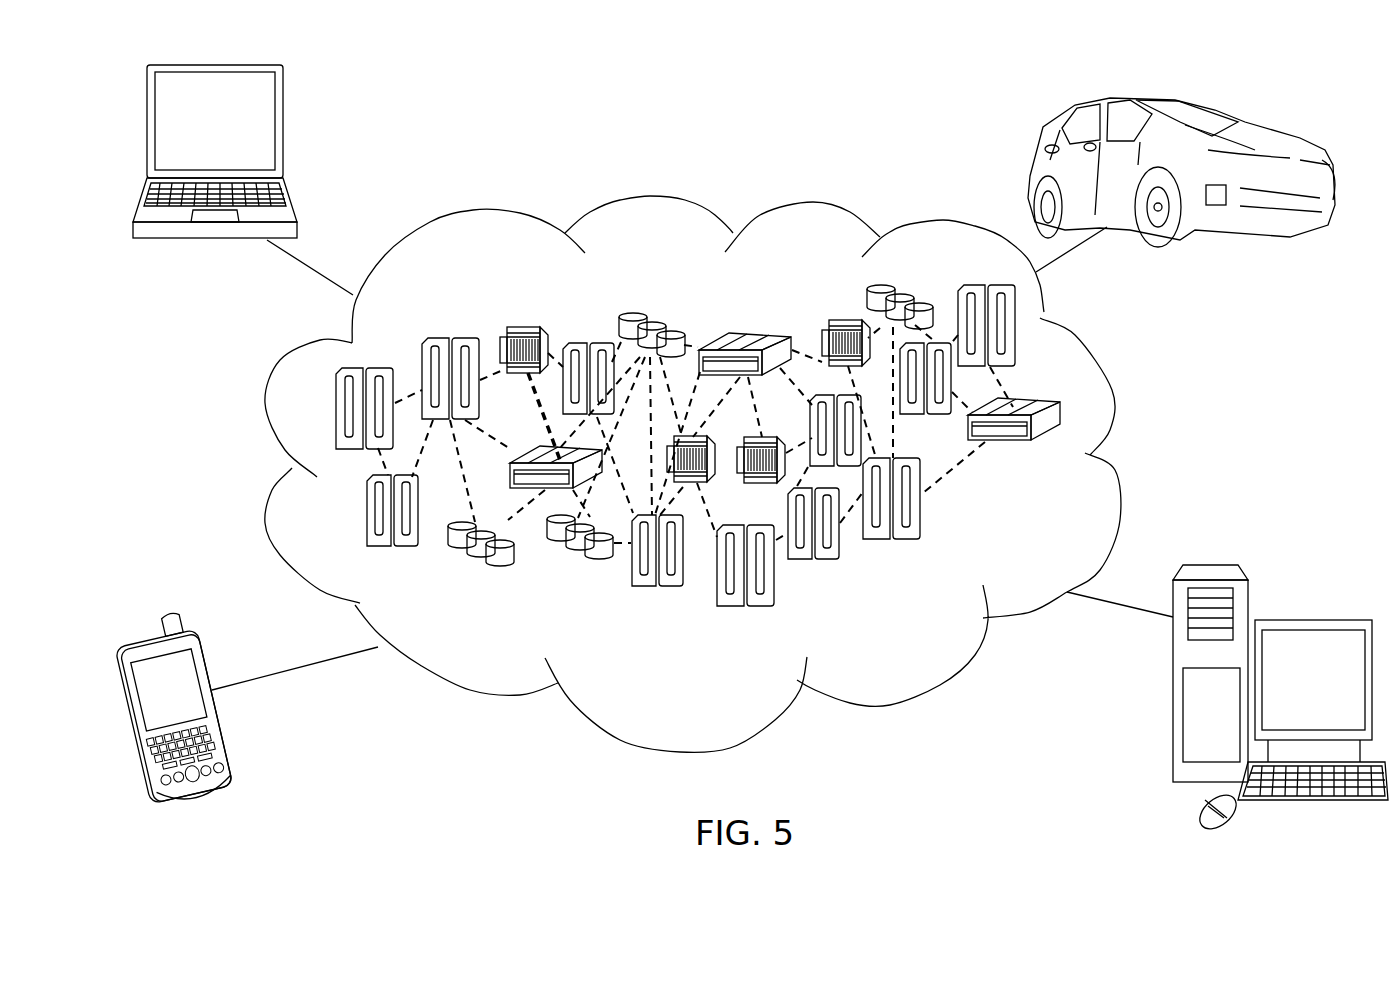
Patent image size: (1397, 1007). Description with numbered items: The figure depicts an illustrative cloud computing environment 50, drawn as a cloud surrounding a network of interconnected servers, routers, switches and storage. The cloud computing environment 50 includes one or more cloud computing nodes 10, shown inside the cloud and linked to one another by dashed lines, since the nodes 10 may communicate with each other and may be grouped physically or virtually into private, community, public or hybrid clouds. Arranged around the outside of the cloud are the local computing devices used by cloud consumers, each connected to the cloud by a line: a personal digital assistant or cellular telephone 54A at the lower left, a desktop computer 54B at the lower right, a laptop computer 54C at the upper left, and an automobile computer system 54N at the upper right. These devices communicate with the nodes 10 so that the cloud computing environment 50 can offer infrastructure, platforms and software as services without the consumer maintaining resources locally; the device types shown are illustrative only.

The laptop computer 54C is at (283, 118).
The automobile computer system 54N is at (1030, 167).
The personal digital assistant (PDA) or cellular telephone 54A is at (214, 722).
The desktop computer 54B is at (1313, 618).
The cloud computing environment 50 is at (1103, 378).
The cloud computing nodes 10 is at (1098, 477).